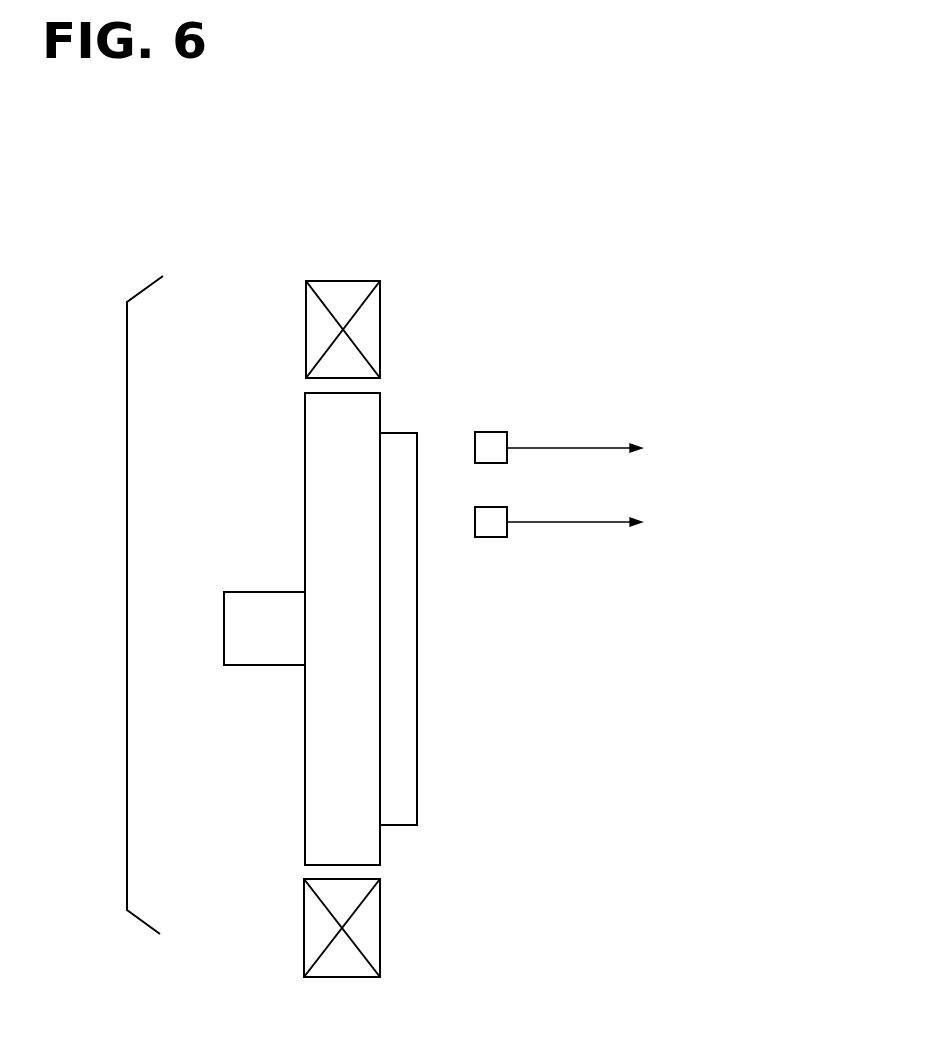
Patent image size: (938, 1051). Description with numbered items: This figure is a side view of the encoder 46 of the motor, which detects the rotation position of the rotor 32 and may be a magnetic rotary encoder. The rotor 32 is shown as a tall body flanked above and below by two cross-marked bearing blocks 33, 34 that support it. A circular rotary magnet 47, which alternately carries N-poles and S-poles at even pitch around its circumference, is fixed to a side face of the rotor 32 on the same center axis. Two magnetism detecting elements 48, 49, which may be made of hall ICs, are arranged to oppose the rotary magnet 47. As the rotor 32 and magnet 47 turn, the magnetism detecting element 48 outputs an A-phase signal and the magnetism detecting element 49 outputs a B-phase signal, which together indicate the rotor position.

The rotor 32 is at (325, 762).
The bearing 33 is at (449, 572).
The bearing 34 is at (347, 281).
The encoder 46 is at (638, 411).
The rotary magnet 47 is at (417, 793).
The magnetism detecting element 48 is at (492, 432).
The magnetism detecting element 49 is at (485, 507).